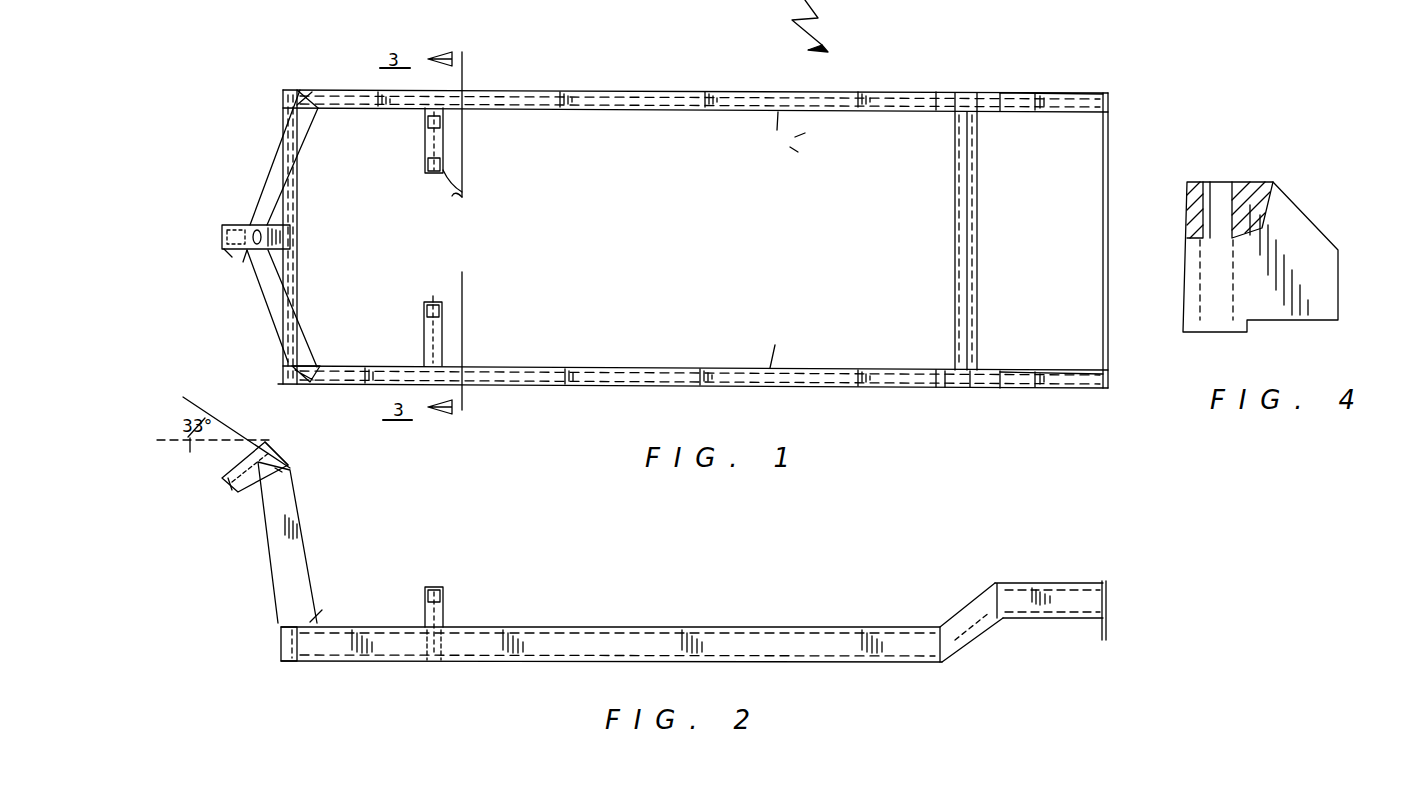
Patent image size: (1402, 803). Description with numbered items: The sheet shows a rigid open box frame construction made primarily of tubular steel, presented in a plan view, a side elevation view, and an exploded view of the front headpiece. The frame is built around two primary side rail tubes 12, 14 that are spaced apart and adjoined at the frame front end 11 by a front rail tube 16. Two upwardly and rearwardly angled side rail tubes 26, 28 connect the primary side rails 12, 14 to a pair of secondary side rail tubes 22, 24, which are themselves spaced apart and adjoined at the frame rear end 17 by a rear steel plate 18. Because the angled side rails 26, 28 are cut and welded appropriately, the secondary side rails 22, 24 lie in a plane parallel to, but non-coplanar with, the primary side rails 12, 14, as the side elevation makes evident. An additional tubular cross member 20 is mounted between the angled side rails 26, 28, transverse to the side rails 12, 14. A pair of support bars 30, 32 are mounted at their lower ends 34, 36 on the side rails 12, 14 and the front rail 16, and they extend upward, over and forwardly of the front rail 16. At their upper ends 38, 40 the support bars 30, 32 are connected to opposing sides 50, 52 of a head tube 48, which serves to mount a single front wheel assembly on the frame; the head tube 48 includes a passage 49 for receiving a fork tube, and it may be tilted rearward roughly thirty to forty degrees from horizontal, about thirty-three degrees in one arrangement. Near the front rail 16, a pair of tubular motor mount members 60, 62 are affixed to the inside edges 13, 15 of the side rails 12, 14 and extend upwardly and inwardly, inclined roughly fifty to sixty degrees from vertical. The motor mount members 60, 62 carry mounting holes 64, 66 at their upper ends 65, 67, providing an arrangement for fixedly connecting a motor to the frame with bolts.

In FIG. 1, the frame front end 11 is at (232, 92).
In FIG. 1, the primary side rail tube 12 is at (614, 388).
In FIG. 2, the primary side rail tube 12 is at (844, 664).
In FIG. 1, the inside edge 13 is at (782, 343).
In FIG. 1, the primary side rail tube 14 is at (683, 90).
In FIG. 1, the inside edge 15 is at (785, 137).
In FIG. 1, the front rail tube 16 is at (283, 92).
In FIG. 2, the front rail tube 16 is at (281, 648).
In FIG. 1, the frame rear end 17 is at (1128, 143).
In FIG. 1, the rear steel plate 18 is at (1110, 198).
In FIG. 2, the rear steel plate 18 is at (1108, 610).
In FIG. 1, the tubular cross member 20 is at (950, 204).
In FIG. 1, the secondary side rail tube 22 is at (1053, 392).
In FIG. 2, the secondary side rail tube 22 is at (1060, 620).
In FIG. 1, the secondary side rail tube 24 is at (1063, 92).
In FIG. 1, the angled side rail tube 26 is at (968, 390).
In FIG. 2, the angled side rail tube 26 is at (972, 643).
In FIG. 1, the angled side rail tube 28 is at (966, 93).
In FIG. 1, the support bar 30 is at (305, 322).
In FIG. 2, the support bar 30 is at (298, 522).
In FIG. 1, the support bar 32 is at (308, 140).
In FIG. 1, the lower end 34 is at (316, 366).
In FIG. 2, the lower end 34 is at (322, 620).
In FIG. 1, the lower end 36 is at (318, 108).
In FIG. 1, the upper end 38 is at (248, 254).
In FIG. 2, the upper end 38 is at (282, 472).
In FIG. 1, the upper end 40 is at (250, 226).
In FIG. 1, the head tube 48 is at (218, 238).
In FIG. 2, the head tube 48 is at (243, 440).
In FIG. 4, the head tube 48 is at (1324, 206).
In FIG. 2, the passage 49 is at (232, 490).
In FIG. 4, the passage 49 is at (1215, 335).
In FIG. 1, the side of head tube 50 is at (228, 251).
In FIG. 2, the side of head tube 50 is at (270, 452).
In FIG. 4, the side of head tube 50 is at (1328, 283).
In FIG. 1, the side of head tube 52 is at (228, 226).
In FIG. 1, the tubular motor mount member 60 is at (424, 328).
In FIG. 2, the tubular motor mount member 60 is at (445, 612).
In FIG. 1, the tubular motor mount member 62 is at (428, 148).
In FIG. 1, the mounting hole 64 is at (442, 312).
In FIG. 1, the upper end 65 is at (436, 300).
In FIG. 1, the mounting hole 66 is at (448, 166).
In FIG. 1, the upper end 67 is at (463, 196).